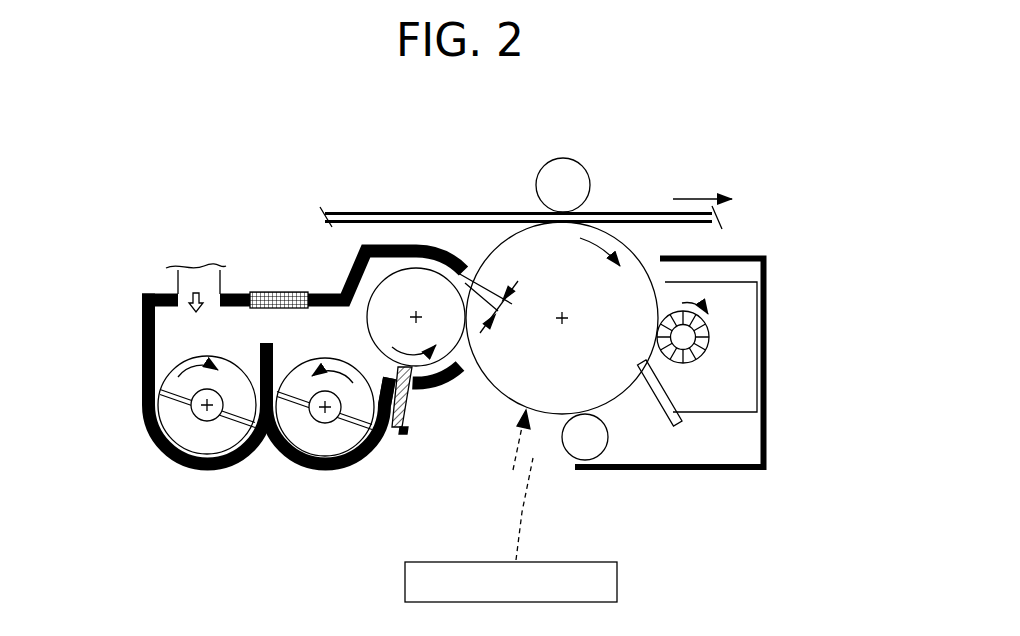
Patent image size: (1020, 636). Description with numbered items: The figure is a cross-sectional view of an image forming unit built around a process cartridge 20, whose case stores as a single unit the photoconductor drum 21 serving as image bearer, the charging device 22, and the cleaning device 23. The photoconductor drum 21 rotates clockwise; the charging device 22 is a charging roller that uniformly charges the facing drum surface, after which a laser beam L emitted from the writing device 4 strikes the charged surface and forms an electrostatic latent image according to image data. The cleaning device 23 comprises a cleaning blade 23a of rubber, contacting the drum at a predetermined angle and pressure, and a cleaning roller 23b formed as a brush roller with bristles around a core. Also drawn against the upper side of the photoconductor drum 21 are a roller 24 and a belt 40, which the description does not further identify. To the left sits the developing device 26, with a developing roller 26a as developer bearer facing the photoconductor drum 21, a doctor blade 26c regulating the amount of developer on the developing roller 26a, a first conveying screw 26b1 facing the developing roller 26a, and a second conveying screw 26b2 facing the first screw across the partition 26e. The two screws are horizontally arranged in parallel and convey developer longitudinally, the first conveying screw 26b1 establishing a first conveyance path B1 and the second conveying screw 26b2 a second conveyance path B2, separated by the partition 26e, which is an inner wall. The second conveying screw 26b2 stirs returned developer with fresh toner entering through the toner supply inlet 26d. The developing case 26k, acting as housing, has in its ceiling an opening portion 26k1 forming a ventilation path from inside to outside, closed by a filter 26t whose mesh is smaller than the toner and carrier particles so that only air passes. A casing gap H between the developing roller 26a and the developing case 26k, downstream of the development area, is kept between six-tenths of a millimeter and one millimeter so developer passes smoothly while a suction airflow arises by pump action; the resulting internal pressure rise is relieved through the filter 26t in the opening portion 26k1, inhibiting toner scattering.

The writing device 4 is at (405, 582).
The process cartridge 20 is at (655, 364).
The photoconductor drum 21 is at (512, 248).
The charging device 22 is at (595, 447).
The cleaning device 23 is at (712, 407).
The cleaning blade 23a is at (662, 408).
The cleaning roller 23b is at (707, 348).
The transfer roller 24 is at (568, 172).
The developing device 26 is at (140, 459).
The developing roller 26a is at (403, 288).
The first conveying screw 26b1 is at (330, 447).
The second conveying screw 26b2 is at (208, 443).
The doctor blade 26c is at (393, 430).
The toner supply inlet 26d is at (176, 322).
The partition 26e is at (262, 348).
The developing case 26k is at (373, 452).
The opening portion 26k1 is at (274, 292).
The filter 26t is at (272, 250).
The intermediate transfer belt 40 is at (653, 212).
The first conveyance path B1 is at (323, 347).
The second conveyance path B2 is at (160, 355).
The casing gap H is at (490, 303).
The laser beam L is at (520, 522).